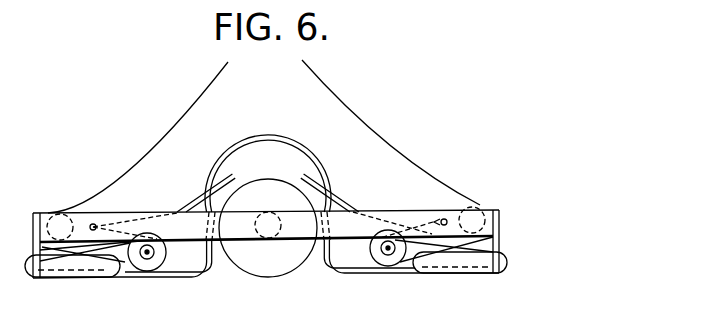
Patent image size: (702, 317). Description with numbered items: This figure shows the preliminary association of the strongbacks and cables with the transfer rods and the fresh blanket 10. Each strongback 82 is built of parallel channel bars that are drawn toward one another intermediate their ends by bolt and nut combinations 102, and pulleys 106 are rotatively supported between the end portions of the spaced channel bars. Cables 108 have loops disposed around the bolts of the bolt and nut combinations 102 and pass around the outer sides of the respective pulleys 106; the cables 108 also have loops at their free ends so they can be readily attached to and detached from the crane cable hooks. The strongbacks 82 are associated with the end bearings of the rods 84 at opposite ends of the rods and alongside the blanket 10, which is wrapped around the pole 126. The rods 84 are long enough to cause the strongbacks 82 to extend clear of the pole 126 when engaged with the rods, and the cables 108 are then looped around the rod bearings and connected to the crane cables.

The fresh blanket 10 is at (216, 194).
The strongback 82 is at (388, 208).
The transfer rod 84 is at (155, 272).
The bolt and nut combination 102 is at (95, 225).
The pulley 106 is at (481, 208).
The cable 108 is at (177, 125).
The third pole 126 is at (295, 193).